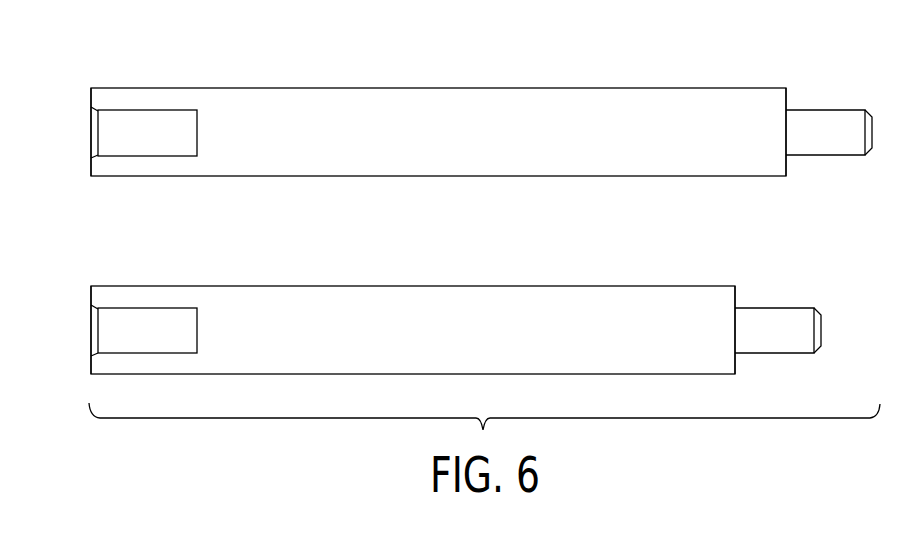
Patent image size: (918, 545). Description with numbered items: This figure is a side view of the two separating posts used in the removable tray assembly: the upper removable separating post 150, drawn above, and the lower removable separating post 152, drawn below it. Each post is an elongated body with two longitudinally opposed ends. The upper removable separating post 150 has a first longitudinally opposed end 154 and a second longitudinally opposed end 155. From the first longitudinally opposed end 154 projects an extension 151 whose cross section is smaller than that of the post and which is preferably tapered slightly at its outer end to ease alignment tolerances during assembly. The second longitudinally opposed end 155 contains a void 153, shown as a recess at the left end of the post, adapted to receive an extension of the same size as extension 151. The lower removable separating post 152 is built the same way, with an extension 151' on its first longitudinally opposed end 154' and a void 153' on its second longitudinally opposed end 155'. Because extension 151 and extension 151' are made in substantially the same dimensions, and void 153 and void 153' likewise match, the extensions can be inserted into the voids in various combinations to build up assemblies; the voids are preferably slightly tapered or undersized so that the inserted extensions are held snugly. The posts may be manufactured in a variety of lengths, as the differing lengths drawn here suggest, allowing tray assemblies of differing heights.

The upper removable separating post 150 is at (720, 88).
The extension 151 is at (832, 97).
The void 153 is at (108, 130).
The first longitudinally opposed end 154 is at (808, 100).
The second longitudinally opposed end 155 is at (59, 119).
The lower removable separating post 152 is at (452, 286).
The extension 151' is at (782, 294).
The void 153' is at (107, 328).
The first longitudinally opposed end 154' is at (759, 298).
The second longitudinally opposed end 155' is at (58, 317).